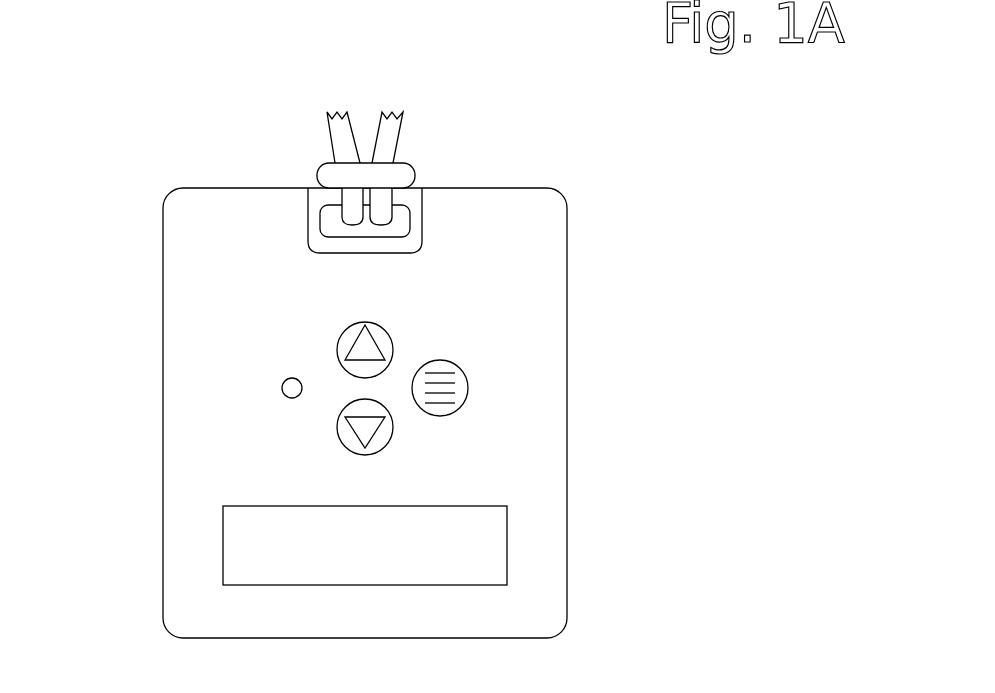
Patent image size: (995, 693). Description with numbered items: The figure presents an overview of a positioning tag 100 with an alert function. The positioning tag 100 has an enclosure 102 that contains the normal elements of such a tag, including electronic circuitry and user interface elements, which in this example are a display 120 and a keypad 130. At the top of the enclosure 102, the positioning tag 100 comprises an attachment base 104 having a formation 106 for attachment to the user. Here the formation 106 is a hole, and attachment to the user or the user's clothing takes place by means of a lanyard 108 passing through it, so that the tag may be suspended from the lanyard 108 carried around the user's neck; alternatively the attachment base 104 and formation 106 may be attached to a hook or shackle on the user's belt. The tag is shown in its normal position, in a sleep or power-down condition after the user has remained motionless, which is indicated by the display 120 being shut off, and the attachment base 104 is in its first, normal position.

The positioning tag 100 is at (115, 163).
The enclosure 102 is at (500, 188).
The attachment base 104 is at (418, 187).
The formation 106 is at (328, 217).
The lanyard 108 is at (352, 115).
The display 120 is at (220, 518).
The keypad 130 is at (265, 360).